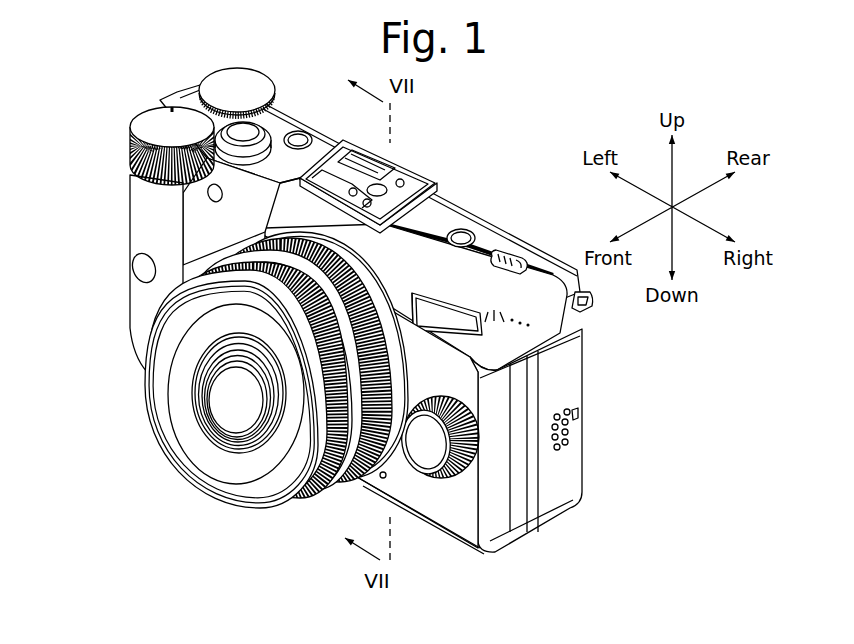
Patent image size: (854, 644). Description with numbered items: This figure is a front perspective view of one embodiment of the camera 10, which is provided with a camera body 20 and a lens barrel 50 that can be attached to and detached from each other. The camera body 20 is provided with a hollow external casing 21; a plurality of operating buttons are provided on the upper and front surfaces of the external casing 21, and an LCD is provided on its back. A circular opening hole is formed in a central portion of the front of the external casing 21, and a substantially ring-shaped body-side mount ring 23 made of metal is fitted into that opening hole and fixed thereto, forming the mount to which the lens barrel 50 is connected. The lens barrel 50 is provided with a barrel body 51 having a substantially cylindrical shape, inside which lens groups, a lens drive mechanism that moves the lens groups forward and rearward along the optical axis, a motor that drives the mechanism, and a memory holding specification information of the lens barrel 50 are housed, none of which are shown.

The camera 10 is at (340, 319).
The camera body 20 is at (387, 319).
The external casing 21 is at (572, 473).
The body-side mount ring 23 is at (407, 462).
The lens barrel 50 is at (221, 370).
The barrel body 51 is at (150, 334).